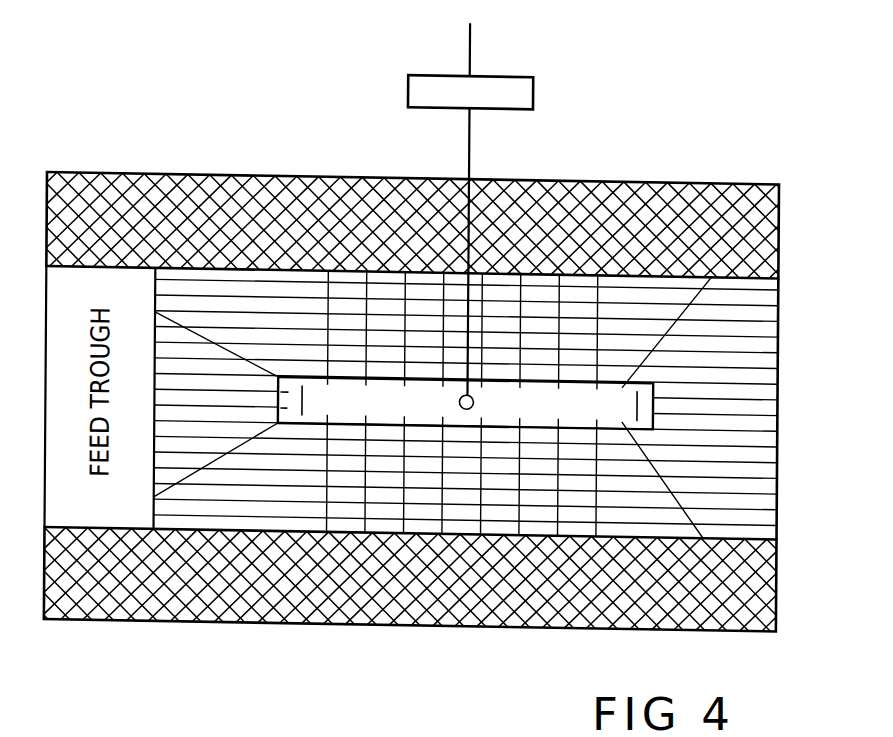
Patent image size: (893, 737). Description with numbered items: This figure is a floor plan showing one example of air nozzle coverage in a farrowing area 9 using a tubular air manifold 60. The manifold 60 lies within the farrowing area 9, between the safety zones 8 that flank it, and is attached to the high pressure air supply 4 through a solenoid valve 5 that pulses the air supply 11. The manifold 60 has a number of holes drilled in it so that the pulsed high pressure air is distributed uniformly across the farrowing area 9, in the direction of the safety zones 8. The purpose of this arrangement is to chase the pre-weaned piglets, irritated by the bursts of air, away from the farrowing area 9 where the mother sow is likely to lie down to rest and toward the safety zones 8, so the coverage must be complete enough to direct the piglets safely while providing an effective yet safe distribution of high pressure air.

The high pressure air supply 4 is at (466, 43).
The solenoid valve 5 is at (514, 85).
The safety zones 8 is at (334, 172).
The farrowing area 9 is at (208, 300).
The air supply 11 is at (466, 156).
The tubular air manifold 60 is at (576, 394).